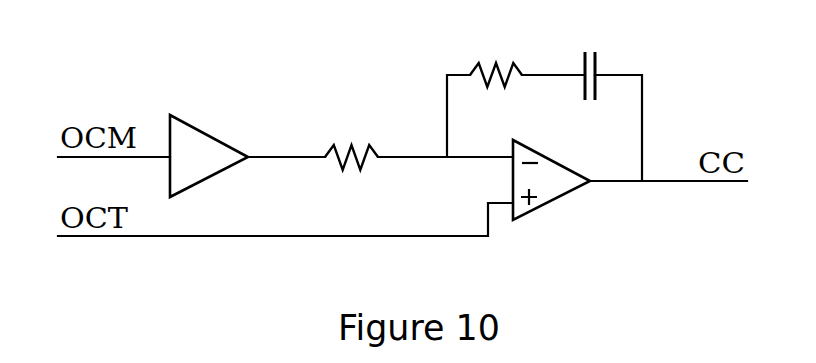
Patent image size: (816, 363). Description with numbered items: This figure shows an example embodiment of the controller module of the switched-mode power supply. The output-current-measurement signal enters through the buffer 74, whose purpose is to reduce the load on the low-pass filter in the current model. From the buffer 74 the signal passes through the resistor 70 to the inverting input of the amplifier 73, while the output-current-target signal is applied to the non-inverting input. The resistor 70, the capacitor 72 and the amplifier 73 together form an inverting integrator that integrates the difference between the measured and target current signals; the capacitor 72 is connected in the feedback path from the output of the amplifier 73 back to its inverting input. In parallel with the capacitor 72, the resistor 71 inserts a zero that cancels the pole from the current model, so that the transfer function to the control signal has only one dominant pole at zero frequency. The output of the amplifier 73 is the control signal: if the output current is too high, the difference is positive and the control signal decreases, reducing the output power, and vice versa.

The resistor 70 is at (351, 160).
The resistor 71 is at (496, 80).
The capacitor 72 is at (597, 88).
The amplifier 73 is at (551, 195).
The buffer 74 is at (209, 144).